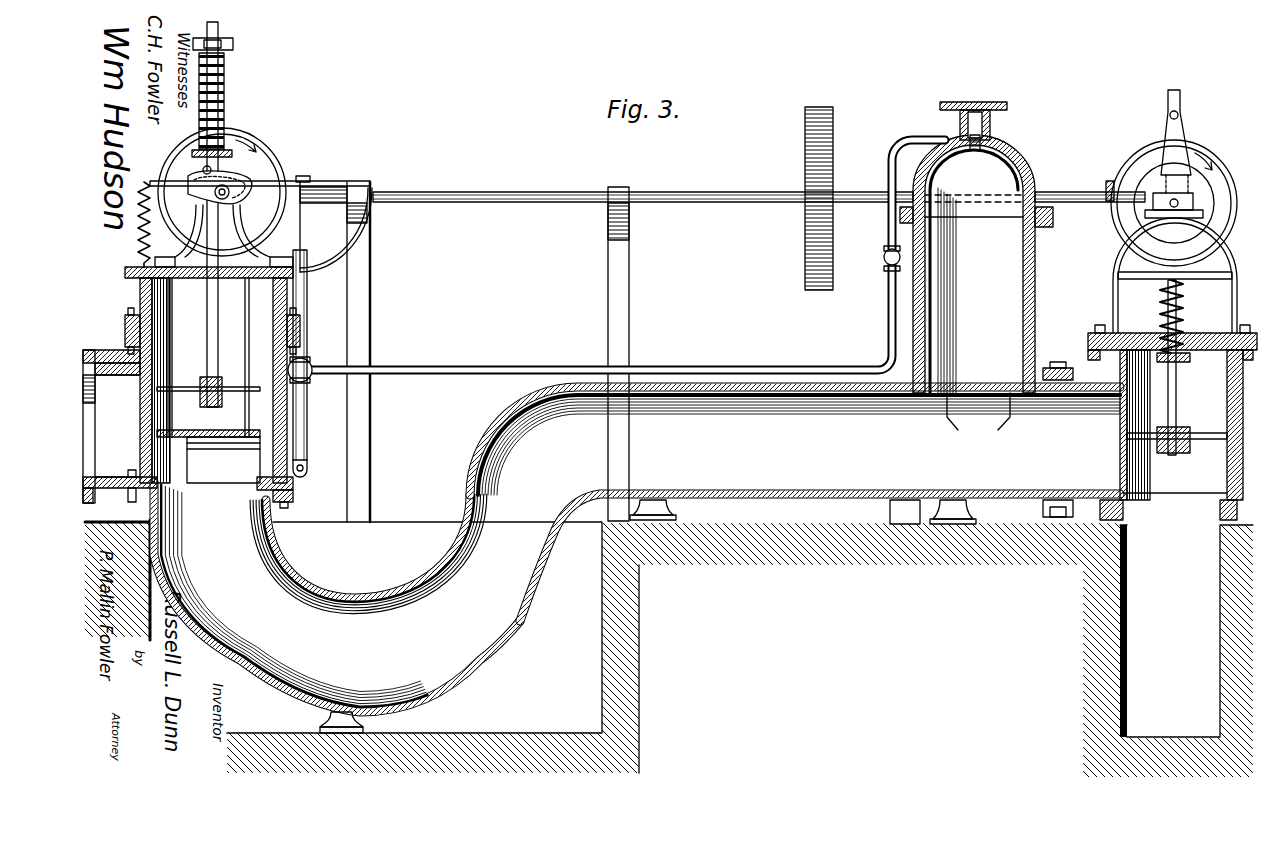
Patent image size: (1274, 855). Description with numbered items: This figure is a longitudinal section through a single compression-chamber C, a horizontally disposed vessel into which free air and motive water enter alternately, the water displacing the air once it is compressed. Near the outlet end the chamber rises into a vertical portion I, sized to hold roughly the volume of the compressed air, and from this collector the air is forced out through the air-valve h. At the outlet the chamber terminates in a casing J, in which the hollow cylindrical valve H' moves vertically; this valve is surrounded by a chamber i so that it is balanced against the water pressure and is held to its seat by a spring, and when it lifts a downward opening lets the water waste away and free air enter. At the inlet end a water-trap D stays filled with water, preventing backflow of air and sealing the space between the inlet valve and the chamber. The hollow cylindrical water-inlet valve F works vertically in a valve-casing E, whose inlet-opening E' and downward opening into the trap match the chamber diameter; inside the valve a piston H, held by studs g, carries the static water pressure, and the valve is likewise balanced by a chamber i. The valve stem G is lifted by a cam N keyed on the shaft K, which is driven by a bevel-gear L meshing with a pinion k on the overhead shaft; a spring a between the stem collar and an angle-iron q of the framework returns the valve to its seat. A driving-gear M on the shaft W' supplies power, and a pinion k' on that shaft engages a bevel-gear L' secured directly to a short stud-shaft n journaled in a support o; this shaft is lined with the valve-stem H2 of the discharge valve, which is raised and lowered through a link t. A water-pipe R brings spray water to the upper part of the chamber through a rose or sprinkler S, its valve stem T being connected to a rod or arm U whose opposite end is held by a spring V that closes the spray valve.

The angle-iron q is at (219, 45).
The spring a is at (224, 78).
The bevel-gear L is at (227, 189).
The shaft K is at (244, 195).
The support o is at (204, 170).
The cam N is at (165, 181).
The spring V is at (138, 226).
The pinion k is at (307, 166).
The rod or arm U is at (362, 182).
The valve stem T is at (347, 310).
The shaft W' is at (759, 188).
The driving-gear M is at (805, 170).
The studs g is at (140, 299).
The valve stem G is at (191, 356).
The cross bar f is at (157, 389).
The inlet-opening E' is at (111, 426).
The water-inlet valve F is at (195, 440).
The piston H is at (223, 460).
The valve-casing E is at (311, 400).
The chamber i is at (307, 450).
The water-pipe R is at (528, 366).
The compression-chamber C is at (795, 404).
The water-trap D is at (337, 607).
The air-valve h is at (970, 100).
The rose or sprinkler S is at (976, 264).
The vertical portion I is at (950, 300).
The valve-stem H2 is at (1168, 96).
The link t is at (1165, 125).
The short stud-shaft n is at (1172, 200).
The bevel-gear L' is at (1141, 197).
The pinion k' is at (1087, 183).
The valve-casing J is at (1100, 362).
The cylindrical valve H' is at (1172, 400).